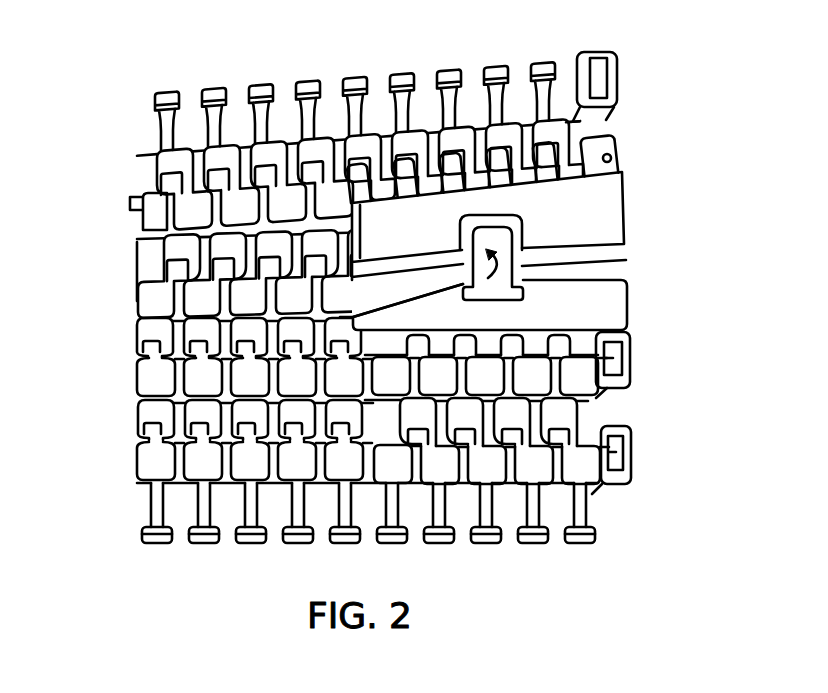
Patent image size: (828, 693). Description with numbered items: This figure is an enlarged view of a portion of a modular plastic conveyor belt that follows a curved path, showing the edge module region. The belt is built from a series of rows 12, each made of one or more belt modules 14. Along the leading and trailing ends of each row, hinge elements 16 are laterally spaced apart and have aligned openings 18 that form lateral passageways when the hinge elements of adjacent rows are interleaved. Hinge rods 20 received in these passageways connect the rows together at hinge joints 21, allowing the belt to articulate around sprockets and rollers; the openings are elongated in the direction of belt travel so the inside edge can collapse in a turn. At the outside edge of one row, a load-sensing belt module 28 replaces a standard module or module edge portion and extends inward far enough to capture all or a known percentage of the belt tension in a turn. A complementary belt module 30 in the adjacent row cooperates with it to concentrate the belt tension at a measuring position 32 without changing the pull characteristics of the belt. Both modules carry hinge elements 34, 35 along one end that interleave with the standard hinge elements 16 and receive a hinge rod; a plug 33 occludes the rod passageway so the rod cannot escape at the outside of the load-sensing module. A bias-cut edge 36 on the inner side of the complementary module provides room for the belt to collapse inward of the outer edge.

The rows 12 is at (650, 442).
The belt modules 14 is at (147, 322).
The hinge elements 16 is at (263, 90).
The aligned openings 18 is at (158, 103).
The hinge rods 20 is at (137, 196).
The hinge joints 21 is at (157, 449).
The load-sensing belt module 28 is at (618, 204).
The complementary belt module 30 is at (628, 305).
The measuring position 32 is at (503, 268).
The plug 33 is at (613, 158).
The hinge elements 34 is at (555, 153).
The hinge elements 35 is at (585, 365).
The bias-cut edge 36 is at (392, 304).